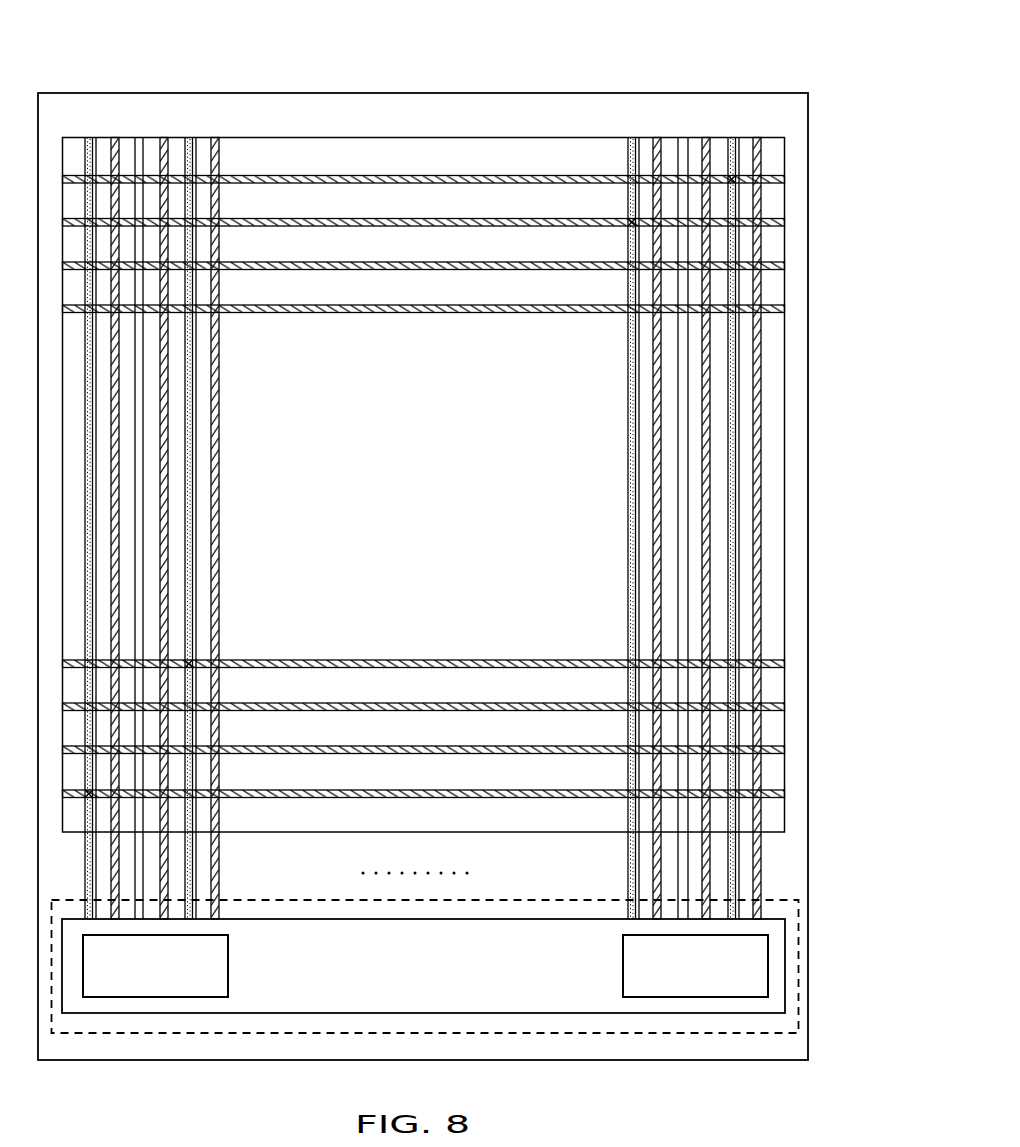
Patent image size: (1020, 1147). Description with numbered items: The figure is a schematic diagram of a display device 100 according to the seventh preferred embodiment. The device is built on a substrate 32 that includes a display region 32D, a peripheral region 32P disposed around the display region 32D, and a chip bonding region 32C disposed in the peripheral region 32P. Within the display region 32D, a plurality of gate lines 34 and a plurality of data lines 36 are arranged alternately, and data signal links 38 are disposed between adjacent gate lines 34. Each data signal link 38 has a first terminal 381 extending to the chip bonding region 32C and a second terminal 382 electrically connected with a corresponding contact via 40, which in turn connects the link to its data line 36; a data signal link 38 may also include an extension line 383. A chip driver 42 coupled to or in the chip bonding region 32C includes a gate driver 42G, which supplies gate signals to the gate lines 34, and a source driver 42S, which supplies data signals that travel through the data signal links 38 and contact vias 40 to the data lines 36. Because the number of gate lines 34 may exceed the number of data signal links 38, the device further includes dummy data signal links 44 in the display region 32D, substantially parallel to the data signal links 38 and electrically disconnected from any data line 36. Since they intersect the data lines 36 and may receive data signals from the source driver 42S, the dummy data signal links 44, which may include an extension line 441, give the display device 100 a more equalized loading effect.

The display device 100 is at (457, 530).
The substrate 32 is at (808, 208).
The display region 32D is at (424, 423).
The peripheral region 32P is at (793, 325).
The chip bonding region 32C is at (798, 932).
The gate lines 34 is at (220, 490).
The data lines 36 is at (243, 312).
The data signal links 38 is at (190, 736).
The first terminal 381 is at (620, 917).
The second terminal 382 is at (621, 231).
The extension line 383 is at (617, 165).
The contact vias 40 is at (628, 219).
The chip driver 42 is at (423, 966).
The gate driver 42G is at (177, 978).
The source driver 42S is at (713, 978).
The dummy data signal links 44 is at (138, 421).
The extension line 441 is at (675, 148).